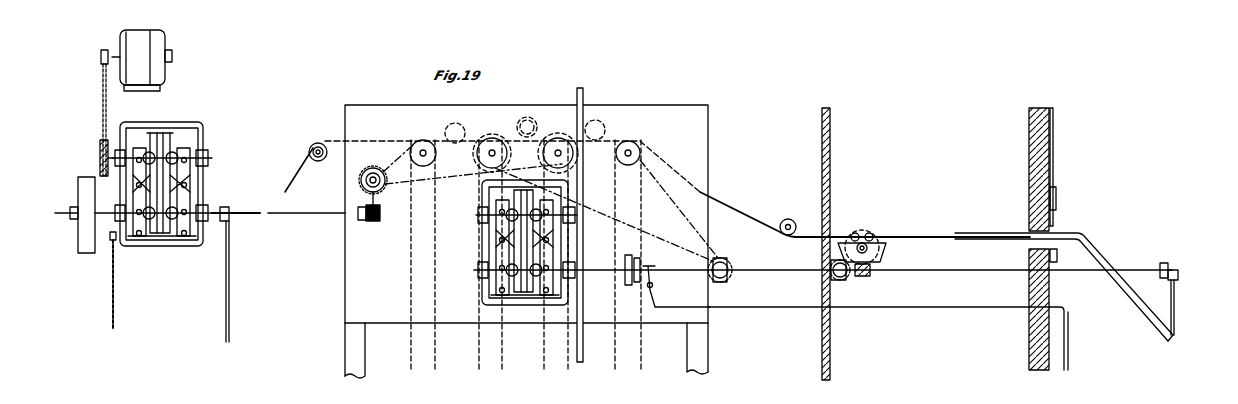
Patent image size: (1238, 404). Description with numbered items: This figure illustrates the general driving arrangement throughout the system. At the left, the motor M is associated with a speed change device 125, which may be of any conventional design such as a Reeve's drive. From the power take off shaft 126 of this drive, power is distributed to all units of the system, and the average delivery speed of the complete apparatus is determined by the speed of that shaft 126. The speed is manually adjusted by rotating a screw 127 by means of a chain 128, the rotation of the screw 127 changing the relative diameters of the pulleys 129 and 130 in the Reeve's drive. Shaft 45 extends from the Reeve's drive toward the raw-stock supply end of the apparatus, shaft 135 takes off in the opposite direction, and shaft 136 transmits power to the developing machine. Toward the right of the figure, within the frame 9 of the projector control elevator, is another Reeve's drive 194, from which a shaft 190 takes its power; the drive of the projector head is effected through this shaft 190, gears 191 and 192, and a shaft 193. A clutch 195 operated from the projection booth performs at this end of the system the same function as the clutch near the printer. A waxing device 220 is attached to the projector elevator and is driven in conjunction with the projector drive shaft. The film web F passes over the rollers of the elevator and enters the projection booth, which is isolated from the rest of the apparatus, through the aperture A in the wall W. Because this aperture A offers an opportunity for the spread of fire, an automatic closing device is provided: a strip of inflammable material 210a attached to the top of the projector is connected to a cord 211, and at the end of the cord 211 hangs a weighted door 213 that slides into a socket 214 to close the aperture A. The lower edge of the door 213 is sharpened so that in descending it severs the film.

The motor M is at (168, 47).
The shaft 45 is at (62, 210).
The power take off shaft 126 is at (107, 222).
The speed change device 125 is at (161, 246).
The screw 127 is at (192, 244).
The chain 128 is at (115, 313).
The pulley 129 is at (168, 143).
The pulley 130 is at (170, 229).
The shaft 135 is at (245, 211).
The shaft 136 is at (230, 313).
The Reeve's drive 194 is at (520, 192).
The clutch 195 is at (638, 257).
The bar 210a is at (581, 356).
The frame 9 is at (702, 347).
The fabric web F is at (750, 211).
The shaft 190 is at (777, 268).
The waxing device 220 is at (862, 232).
The cord 211 is at (1053, 161).
The weighted door 213 is at (1056, 208).
The aperture A is at (1036, 235).
The socket 214 is at (1057, 249).
The gear 191 is at (1167, 266).
The gear 192 is at (1179, 273).
The shaft 193 is at (1175, 297).
The wall W is at (1030, 327).